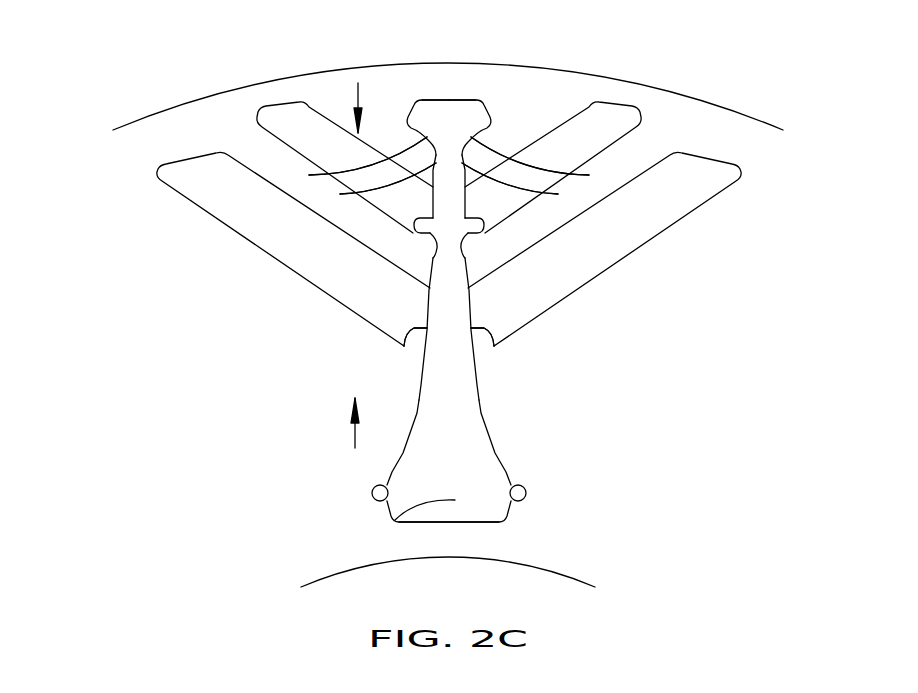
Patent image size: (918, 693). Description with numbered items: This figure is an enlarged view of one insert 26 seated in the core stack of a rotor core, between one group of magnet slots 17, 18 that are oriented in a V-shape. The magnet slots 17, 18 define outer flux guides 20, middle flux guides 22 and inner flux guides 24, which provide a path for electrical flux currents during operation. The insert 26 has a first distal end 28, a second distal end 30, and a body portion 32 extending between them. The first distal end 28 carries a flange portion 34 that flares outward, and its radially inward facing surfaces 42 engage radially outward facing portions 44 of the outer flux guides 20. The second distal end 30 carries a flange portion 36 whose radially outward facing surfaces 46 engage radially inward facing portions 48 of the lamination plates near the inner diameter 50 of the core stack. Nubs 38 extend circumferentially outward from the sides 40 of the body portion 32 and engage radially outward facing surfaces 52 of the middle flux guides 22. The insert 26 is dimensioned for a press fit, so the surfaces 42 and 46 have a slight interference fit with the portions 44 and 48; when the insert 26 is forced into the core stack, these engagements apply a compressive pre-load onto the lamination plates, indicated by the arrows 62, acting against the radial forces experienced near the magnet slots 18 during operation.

The disk post 17 is at (449, 200).
The magnet slots 18 is at (290, 123).
The outer flux guides 20 is at (368, 139).
The middle flux guides 22 is at (340, 222).
The inner flux guides 24 is at (338, 352).
The insert 26 is at (435, 489).
The first distal end 28 is at (437, 98).
The second distal end 30 is at (449, 523).
The body portion 32 is at (450, 303).
The flange portion 34 is at (455, 117).
The flange portion 36 is at (395, 520).
The nubs 38 is at (414, 229).
The sides 40 is at (404, 346).
The radially inward facing surfaces 42 is at (346, 194).
The radially outward facing portions 44 is at (318, 174).
The radially outward facing surfaces 46 is at (388, 479).
The radially inward facing portions 48 is at (377, 500).
The inner diameter 50 is at (321, 587).
The radially outward facing surfaces 52 is at (432, 257).
The arrows 62 is at (352, 100).